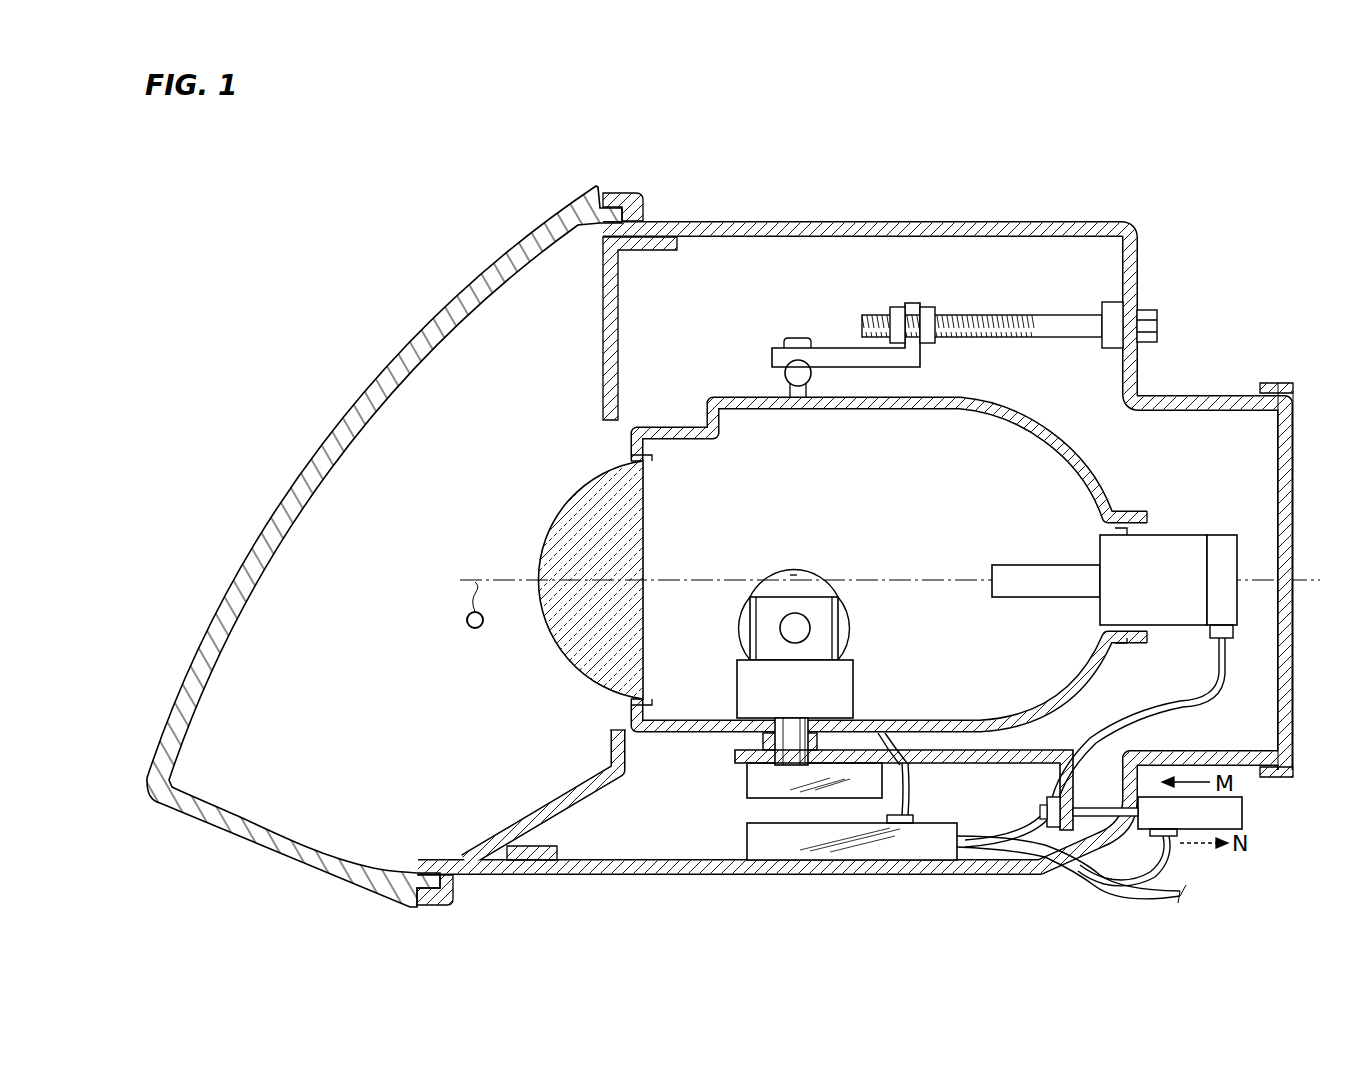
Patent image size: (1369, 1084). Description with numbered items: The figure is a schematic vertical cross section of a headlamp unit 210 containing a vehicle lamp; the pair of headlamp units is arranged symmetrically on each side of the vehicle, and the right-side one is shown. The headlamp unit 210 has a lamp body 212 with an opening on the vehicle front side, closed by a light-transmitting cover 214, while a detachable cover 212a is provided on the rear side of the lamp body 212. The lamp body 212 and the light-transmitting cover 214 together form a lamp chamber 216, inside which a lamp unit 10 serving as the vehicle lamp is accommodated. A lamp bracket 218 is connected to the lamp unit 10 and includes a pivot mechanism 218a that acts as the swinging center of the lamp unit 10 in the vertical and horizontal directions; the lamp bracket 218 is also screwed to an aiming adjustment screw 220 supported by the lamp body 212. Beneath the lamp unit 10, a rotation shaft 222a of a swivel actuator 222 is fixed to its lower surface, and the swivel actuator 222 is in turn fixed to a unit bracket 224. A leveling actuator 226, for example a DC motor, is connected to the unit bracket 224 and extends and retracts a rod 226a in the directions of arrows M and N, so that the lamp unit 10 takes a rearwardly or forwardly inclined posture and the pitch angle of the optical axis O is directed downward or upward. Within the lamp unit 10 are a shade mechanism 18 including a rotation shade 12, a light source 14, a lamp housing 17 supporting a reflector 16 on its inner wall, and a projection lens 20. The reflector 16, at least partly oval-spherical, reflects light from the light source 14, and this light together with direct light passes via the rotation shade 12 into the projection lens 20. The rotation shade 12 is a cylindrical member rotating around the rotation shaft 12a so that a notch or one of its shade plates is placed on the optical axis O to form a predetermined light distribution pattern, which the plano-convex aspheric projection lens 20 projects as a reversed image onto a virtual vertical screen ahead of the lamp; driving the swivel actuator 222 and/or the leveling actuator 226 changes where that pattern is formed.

The lamp unit 10 is at (889, 550).
The rotation shade 12 is at (824, 607).
The rotation shaft 12a is at (800, 628).
The light source 14 is at (1040, 567).
The reflector 16 is at (945, 412).
The lamp housing 17 is at (1052, 430).
The shade mechanism 18 is at (791, 566).
The projection lens 20 is at (565, 500).
The headlamp unit 210 is at (1014, 213).
The lamp body 212 is at (822, 221).
The detachable cover 212a is at (1272, 382).
The light-transmitting cover 214 is at (428, 322).
The lamp chamber 216 is at (552, 371).
The lamp bracket 218 is at (850, 355).
The pivot mechanism 218a is at (785, 372).
The aiming adjustment screw 220 is at (1057, 325).
The swivel actuator 222 is at (762, 782).
The rotation shaft 222a is at (772, 740).
The unit bracket 224 is at (942, 765).
The leveling actuator 226 is at (1242, 812).
The rod 226a is at (1105, 805).